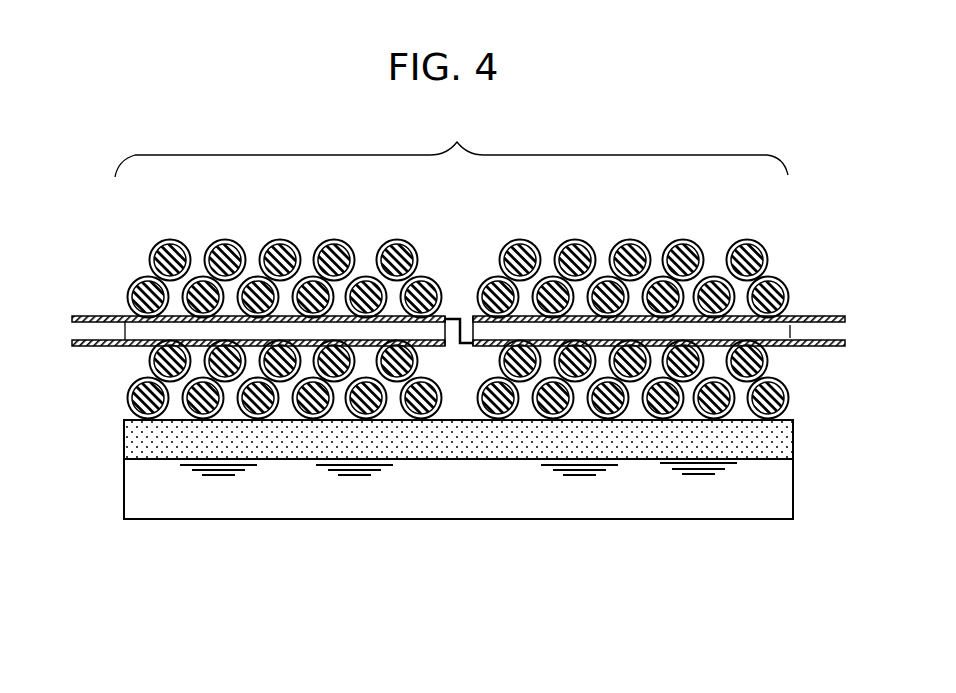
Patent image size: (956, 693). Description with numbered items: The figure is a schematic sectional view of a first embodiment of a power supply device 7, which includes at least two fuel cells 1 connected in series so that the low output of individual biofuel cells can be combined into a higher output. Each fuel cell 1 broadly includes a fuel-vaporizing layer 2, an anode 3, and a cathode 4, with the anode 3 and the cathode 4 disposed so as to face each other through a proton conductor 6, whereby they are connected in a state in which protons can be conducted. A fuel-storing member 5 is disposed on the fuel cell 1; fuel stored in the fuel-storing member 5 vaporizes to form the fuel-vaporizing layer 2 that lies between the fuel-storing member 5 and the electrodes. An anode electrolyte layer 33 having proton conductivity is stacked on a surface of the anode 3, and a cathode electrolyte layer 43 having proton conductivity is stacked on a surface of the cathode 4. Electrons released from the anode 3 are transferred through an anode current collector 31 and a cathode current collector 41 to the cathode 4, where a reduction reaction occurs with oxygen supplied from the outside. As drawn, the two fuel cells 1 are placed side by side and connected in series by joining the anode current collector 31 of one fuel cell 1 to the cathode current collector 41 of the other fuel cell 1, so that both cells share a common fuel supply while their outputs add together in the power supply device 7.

The power supply device 7 is at (451, 143).
The fuel cell 1 is at (380, 218).
The cathode electrolyte layer 43 is at (148, 259).
The cathode current collector 41 is at (72, 318).
The anode current collector 31 is at (72, 343).
The anode electrolyte layer 33 is at (127, 390).
The cathode 4 is at (776, 290).
The anode 3 is at (776, 394).
The proton conductor 6 is at (790, 331).
The fuel-vaporizing layer 2 is at (787, 438).
The fuel-storing member 5 is at (787, 490).